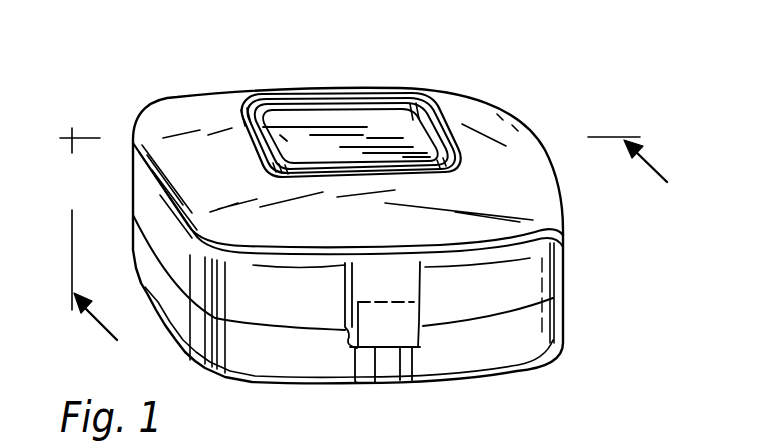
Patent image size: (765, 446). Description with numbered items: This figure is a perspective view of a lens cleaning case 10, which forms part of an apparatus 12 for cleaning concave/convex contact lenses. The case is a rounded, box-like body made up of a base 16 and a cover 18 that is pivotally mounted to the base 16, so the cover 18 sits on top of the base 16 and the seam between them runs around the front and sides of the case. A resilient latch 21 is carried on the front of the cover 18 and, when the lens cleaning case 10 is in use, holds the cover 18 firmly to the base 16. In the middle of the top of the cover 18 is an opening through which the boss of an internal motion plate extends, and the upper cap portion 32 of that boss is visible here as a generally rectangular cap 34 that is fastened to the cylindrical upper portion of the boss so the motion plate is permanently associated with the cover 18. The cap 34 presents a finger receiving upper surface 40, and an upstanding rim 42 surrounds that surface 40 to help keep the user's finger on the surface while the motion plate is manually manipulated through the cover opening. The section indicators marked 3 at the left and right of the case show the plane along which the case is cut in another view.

The lens cleaning case 10 is at (210, 374).
The apparatus 12 is at (583, 283).
The base 16 is at (562, 344).
The cover 18 is at (562, 248).
The resilient latch 21 is at (387, 333).
The upper cap portion 32 is at (300, 130).
The generally rectangular cap 34 is at (395, 127).
The finger receiving upper surface 40 is at (252, 104).
The upstanding rim 42 is at (463, 122).
The section line 3- 3 is at (380, 251).